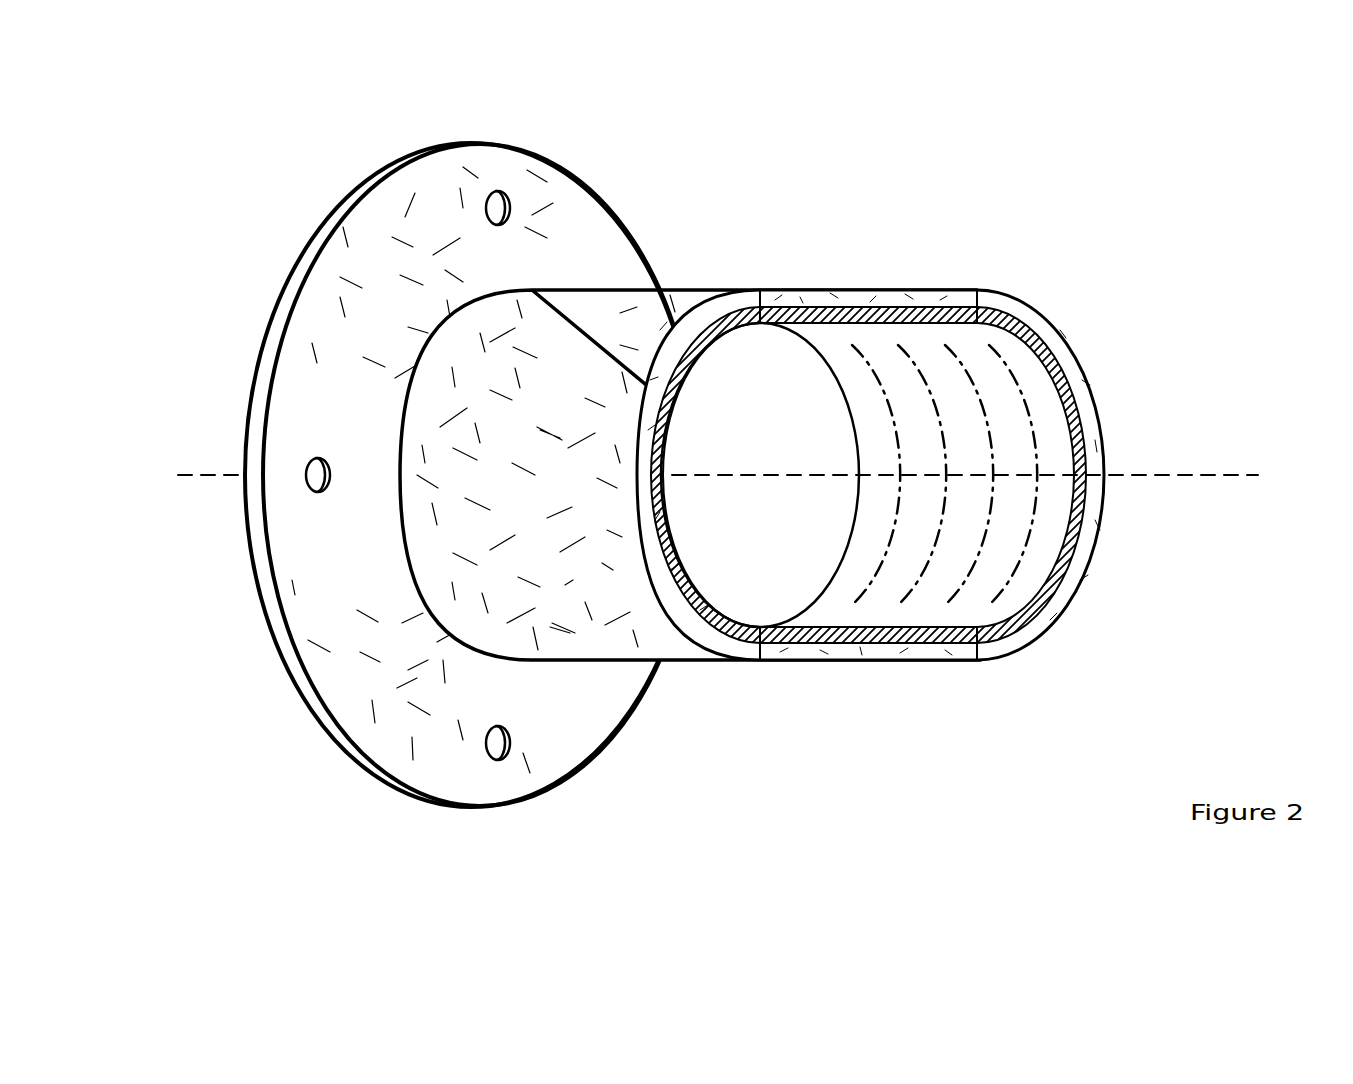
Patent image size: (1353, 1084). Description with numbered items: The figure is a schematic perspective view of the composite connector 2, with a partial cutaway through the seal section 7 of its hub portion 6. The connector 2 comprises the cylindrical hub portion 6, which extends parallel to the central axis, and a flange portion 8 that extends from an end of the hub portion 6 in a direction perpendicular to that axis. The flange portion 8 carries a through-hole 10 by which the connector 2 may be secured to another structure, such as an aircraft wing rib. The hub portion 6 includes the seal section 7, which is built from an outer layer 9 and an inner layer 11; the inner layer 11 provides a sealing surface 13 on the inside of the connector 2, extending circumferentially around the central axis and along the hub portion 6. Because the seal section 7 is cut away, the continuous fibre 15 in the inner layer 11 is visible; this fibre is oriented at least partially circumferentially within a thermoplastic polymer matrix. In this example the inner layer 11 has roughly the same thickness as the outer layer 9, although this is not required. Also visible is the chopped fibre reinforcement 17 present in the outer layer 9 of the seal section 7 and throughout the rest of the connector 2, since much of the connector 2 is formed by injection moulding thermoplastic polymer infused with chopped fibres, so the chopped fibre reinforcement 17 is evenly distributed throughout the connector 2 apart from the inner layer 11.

The connector 2 is at (908, 688).
The hub portion 6 is at (645, 325).
The seal section 7 is at (977, 283).
The flange portion 8 is at (338, 595).
The outer layer 9 is at (1008, 658).
The through-hole 10 is at (489, 759).
The inner layer 11 is at (840, 640).
The sealing surface 13 is at (1030, 373).
The continuous fibre 15 is at (1027, 540).
The chopped fibre reinforcement 17 is at (583, 355).